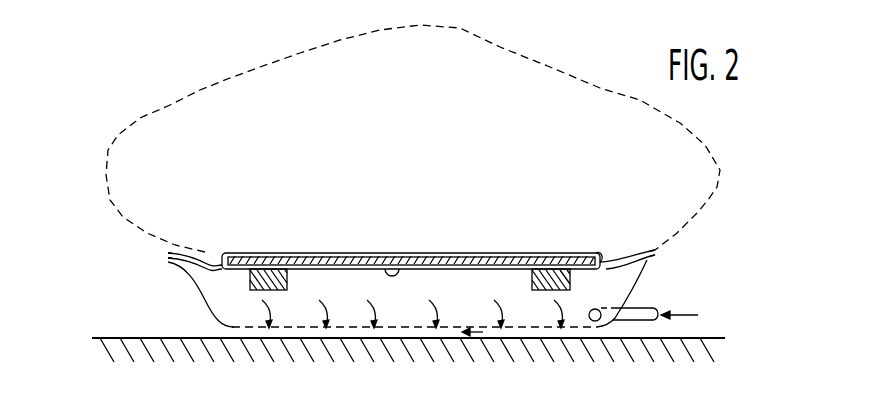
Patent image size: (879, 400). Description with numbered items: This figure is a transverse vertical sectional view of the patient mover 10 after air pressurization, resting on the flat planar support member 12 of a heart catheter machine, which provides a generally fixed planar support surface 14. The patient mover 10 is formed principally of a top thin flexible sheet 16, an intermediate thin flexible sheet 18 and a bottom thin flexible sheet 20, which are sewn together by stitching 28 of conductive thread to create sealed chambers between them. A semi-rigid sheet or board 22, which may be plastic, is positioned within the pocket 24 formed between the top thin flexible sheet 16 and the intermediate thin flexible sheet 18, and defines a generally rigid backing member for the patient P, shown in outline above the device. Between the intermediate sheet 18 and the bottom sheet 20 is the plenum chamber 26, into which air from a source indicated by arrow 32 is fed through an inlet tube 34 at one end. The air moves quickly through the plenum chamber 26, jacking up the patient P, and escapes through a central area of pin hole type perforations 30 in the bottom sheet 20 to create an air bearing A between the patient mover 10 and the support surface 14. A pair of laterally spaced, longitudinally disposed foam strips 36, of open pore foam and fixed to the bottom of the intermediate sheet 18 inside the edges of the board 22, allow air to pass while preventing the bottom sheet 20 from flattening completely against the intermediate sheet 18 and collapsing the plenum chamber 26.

The patient P is at (120, 156).
The patient mover 10 is at (517, 191).
The flat planar support member 12 is at (676, 350).
The planar support surface 14 is at (702, 337).
The top thin flexible sheet 16 is at (312, 252).
The intermediate thin flexible sheet 18 is at (391, 252).
The bottom thin flexible sheet 20 is at (212, 320).
The semi-rigid sheet or board 22 is at (470, 259).
The pocket 24 is at (601, 258).
The plenum chamber 26 is at (423, 300).
The stitching 28 is at (172, 251).
The pin hole type perforations 30 is at (308, 331).
The air source arrow 32 is at (684, 310).
The inlet tube 34 is at (633, 308).
The foam strips 36 is at (250, 287).
The air bearing A is at (483, 333).